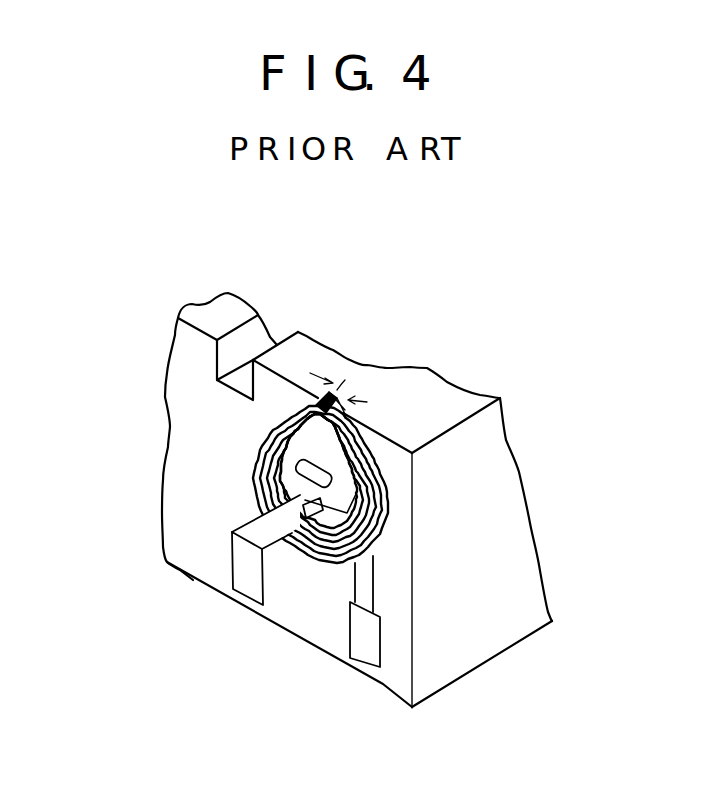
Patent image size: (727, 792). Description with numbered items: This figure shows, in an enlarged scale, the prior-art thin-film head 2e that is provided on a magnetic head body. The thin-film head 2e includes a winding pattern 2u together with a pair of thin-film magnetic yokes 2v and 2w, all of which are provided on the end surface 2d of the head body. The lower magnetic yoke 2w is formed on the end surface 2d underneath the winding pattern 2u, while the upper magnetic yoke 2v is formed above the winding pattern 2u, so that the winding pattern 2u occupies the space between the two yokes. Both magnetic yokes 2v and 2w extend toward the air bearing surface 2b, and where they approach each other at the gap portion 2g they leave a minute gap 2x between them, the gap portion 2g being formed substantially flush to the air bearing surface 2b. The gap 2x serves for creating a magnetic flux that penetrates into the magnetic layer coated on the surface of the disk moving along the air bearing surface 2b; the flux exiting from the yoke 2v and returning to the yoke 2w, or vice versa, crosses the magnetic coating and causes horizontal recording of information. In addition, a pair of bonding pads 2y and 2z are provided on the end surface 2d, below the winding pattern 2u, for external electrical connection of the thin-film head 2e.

The thin-film head 2e is at (363, 264).
The air bearing surface 2b is at (433, 390).
The end surface 2d is at (182, 500).
The gap portion 2g is at (337, 392).
The gap 2x is at (340, 400).
The magnetic yoke 2w is at (343, 415).
The magnetic yoke 2v is at (309, 403).
The winding pattern 2u is at (390, 483).
The bonding pad 2z is at (230, 590).
The bonding pad 2y is at (382, 656).